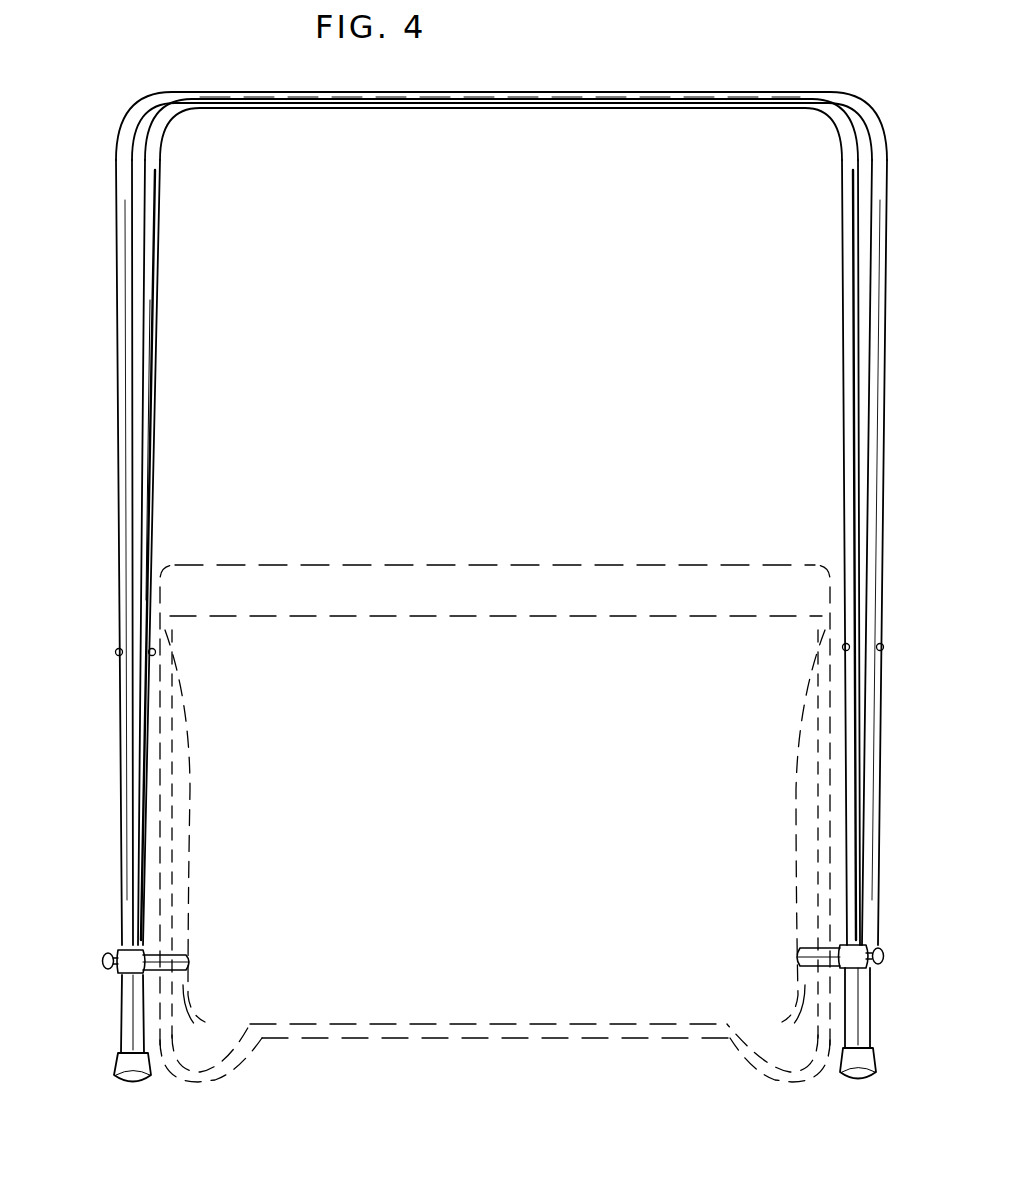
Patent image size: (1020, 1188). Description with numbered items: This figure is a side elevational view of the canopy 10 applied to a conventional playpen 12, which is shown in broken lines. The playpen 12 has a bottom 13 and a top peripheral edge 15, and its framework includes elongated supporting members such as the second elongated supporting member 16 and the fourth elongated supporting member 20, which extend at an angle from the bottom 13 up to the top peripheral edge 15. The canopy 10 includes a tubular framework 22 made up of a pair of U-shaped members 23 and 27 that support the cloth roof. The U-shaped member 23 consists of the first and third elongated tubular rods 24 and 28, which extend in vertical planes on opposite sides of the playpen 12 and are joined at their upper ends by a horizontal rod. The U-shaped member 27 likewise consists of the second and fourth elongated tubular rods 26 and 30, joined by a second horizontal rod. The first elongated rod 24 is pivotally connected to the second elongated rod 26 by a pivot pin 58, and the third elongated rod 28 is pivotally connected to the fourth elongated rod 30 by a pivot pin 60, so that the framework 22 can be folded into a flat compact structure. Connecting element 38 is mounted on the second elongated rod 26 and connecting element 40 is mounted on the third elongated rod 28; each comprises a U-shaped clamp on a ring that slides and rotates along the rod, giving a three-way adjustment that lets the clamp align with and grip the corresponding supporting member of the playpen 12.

The canopy 10 is at (753, 60).
The playpen 12 is at (437, 578).
The bottom 13 is at (355, 1030).
The top peripheral edge 15 is at (503, 566).
The second elongated supporting member 16 is at (818, 813).
The fourth elongated supporting member 20 is at (172, 772).
The tubular framework 22 is at (493, 82).
The U-shaped member 23 is at (107, 246).
The first elongated tubular rod 24 is at (848, 256).
The second elongated tubular rod 26 is at (877, 232).
The U-shaped member 27 is at (182, 302).
The third elongated tubular rod 28 is at (122, 160).
The fourth elongated tubular rod 30 is at (150, 490).
The connecting element 38 is at (776, 958).
The connecting element 40 is at (198, 972).
The pivot pin 58 is at (881, 645).
The pivot pin 60 is at (116, 650).